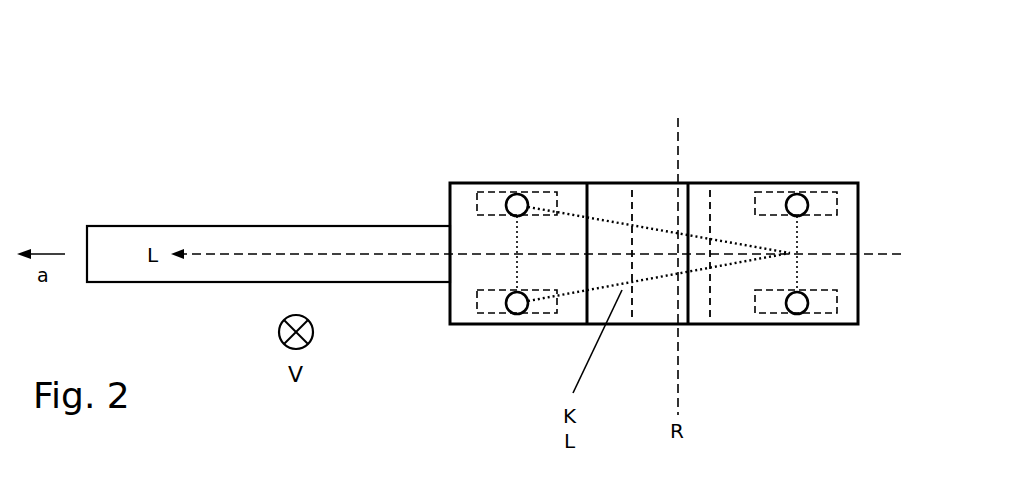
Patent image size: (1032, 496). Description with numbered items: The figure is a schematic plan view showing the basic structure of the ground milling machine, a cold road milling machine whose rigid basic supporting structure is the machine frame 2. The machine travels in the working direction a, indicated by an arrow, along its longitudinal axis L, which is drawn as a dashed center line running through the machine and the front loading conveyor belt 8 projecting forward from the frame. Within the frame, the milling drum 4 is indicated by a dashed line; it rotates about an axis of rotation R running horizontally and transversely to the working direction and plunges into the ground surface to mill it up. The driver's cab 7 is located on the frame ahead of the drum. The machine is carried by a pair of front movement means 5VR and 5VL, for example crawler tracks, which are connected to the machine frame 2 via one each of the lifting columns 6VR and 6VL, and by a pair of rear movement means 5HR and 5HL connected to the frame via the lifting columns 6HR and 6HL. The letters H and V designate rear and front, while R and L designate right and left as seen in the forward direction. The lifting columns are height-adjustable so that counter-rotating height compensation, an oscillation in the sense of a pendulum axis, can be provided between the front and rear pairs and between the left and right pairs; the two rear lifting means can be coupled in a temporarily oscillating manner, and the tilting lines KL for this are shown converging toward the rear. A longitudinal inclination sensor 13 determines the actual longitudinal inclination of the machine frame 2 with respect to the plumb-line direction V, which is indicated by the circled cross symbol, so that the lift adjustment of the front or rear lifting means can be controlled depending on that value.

The machine frame 2 is at (823, 182).
The milling drum 4 is at (703, 193).
The front right movement means 5VR is at (488, 205).
The front left movement means 5VL is at (490, 300).
The rear right movement means 5HR is at (830, 203).
The rear left movement means 5HL is at (823, 300).
The front right lifting column 6VR is at (515, 200).
The front left lifting column 6VL is at (516, 308).
The rear right lifting column 6HR is at (798, 200).
The rear left lifting column 6HL is at (798, 308).
The driver's cab 7 is at (597, 193).
The front loading conveyor belt 8 is at (265, 243).
The longitudinal inclination sensor 13 is at (717, 262).